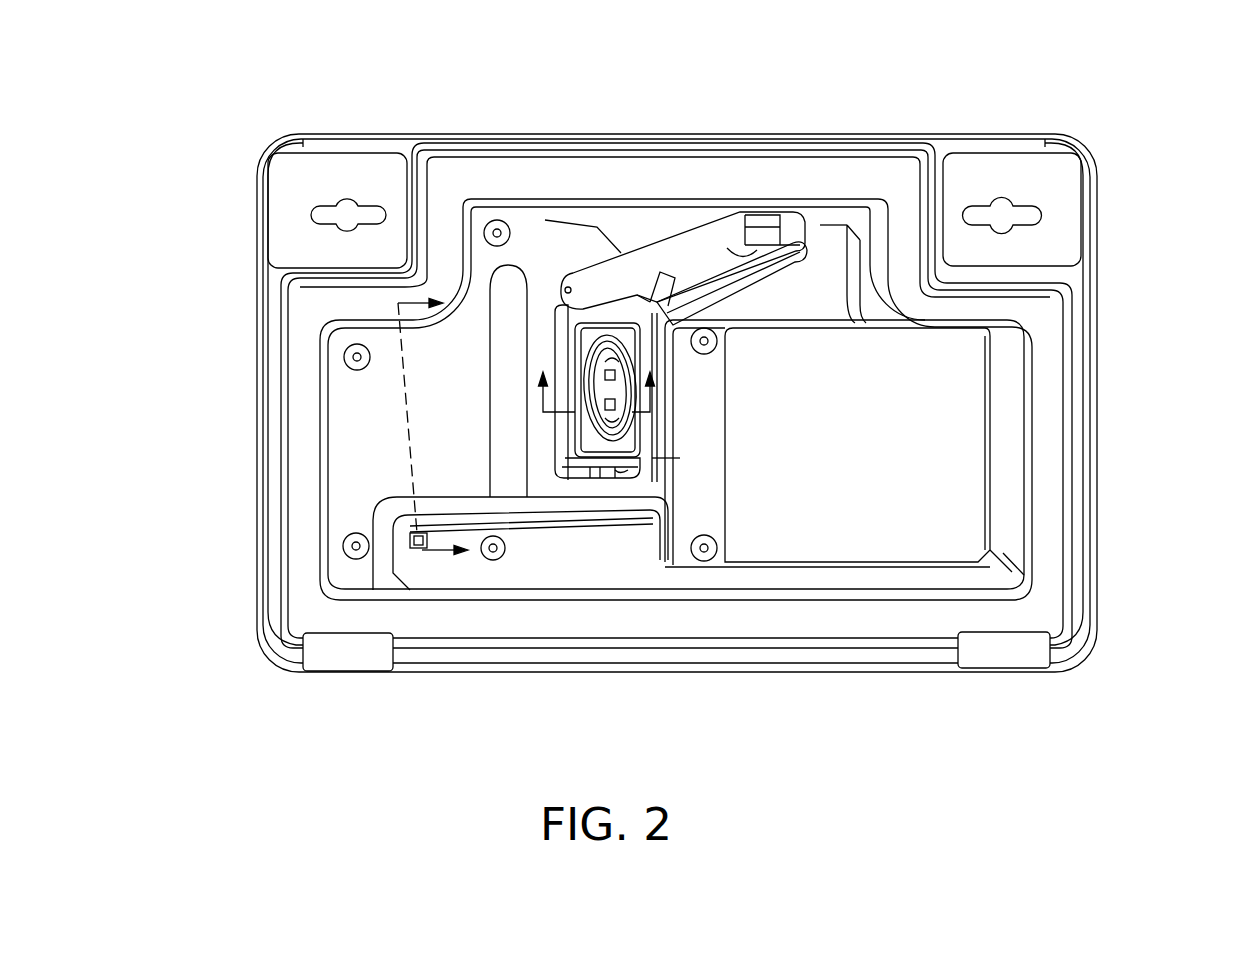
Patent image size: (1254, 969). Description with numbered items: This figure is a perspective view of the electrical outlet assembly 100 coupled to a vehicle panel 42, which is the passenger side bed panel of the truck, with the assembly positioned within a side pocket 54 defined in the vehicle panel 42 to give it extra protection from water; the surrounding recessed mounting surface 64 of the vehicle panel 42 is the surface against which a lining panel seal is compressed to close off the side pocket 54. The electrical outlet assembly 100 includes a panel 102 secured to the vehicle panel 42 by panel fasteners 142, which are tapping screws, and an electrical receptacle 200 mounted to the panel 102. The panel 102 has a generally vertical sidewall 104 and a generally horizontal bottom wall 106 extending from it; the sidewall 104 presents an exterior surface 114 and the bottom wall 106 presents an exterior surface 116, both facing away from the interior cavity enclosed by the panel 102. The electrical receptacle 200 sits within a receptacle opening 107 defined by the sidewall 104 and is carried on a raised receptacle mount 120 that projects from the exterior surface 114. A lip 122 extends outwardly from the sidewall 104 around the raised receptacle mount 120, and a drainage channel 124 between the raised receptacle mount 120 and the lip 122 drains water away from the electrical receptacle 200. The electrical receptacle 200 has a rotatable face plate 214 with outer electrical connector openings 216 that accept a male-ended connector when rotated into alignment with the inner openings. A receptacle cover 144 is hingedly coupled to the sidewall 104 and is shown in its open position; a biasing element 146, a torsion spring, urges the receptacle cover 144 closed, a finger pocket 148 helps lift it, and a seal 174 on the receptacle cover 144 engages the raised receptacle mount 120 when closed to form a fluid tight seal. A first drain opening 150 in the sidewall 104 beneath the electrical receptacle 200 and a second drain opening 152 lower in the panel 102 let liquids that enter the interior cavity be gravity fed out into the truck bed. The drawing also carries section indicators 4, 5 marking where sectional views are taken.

The vehicle panel 42 is at (1033, 168).
The side pocket 54 is at (866, 521).
The recessed mounting surface 64 is at (1043, 318).
The electrical outlet assembly 100 is at (607, 205).
The panel 102 is at (655, 572).
The sidewall 104 is at (652, 452).
The bottom wall 106 is at (530, 518).
The receptacle opening 107 is at (622, 427).
The exterior surface 114 is at (566, 233).
The exterior surface 116 is at (497, 522).
The raised receptacle mount 120 is at (575, 350).
The lip 122 is at (553, 420).
The drainage channel 124 is at (620, 478).
The panel fasteners 142 is at (490, 220).
The receptacle cover 144 is at (755, 195).
The biasing element 146 is at (694, 228).
The finger pocket 148 is at (780, 213).
The first drain opening 150 is at (597, 478).
The second drain opening 152 is at (300, 598).
The seal 174 is at (830, 283).
The electrical receptacle 200 is at (892, 290).
The face plate 214 is at (625, 368).
The outer electrical connector openings 216 is at (615, 404).
The section line 4- 4 is at (594, 372).
The section line 5- 5 is at (442, 422).